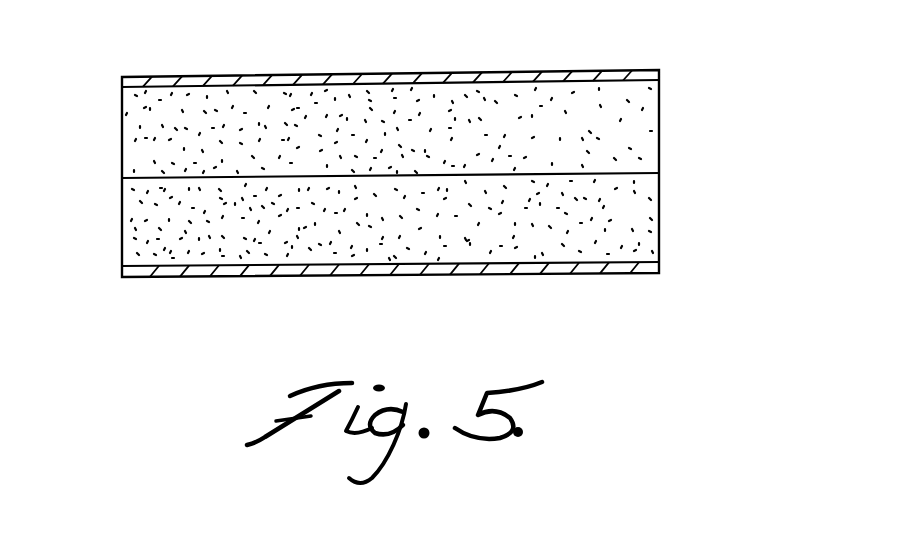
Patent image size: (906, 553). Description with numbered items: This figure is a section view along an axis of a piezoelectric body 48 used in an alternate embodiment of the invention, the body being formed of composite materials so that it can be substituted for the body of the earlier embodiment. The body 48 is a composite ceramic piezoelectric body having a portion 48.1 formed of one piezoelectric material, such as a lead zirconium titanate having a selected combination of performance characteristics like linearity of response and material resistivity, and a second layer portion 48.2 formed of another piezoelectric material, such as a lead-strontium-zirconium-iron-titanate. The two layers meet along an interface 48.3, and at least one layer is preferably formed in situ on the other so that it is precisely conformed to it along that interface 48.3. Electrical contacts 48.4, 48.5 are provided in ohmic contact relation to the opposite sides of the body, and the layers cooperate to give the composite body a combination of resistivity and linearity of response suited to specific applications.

The piezoelectric body 48 is at (684, 51).
The portion 48.1 is at (636, 131).
The second layer portion 48.2 is at (626, 219).
The interface 48.3 is at (632, 168).
The electrical contact 48.4 is at (171, 83).
The electrical contact 48.5 is at (217, 272).